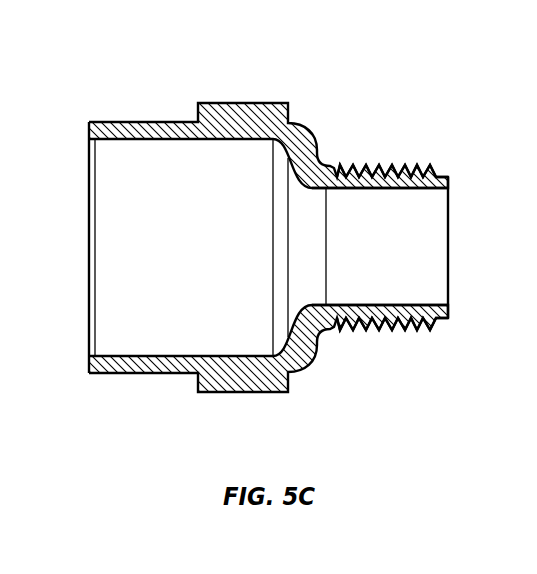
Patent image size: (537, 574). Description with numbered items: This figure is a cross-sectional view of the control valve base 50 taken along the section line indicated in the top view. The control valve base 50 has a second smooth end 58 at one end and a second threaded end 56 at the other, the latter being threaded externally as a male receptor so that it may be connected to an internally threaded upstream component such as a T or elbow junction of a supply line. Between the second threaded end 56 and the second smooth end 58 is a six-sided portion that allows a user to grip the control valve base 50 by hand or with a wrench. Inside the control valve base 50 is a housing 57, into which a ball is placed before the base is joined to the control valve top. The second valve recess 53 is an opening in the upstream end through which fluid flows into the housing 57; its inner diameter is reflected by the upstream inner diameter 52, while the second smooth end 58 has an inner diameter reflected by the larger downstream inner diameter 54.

The control valve base 50 is at (88, 73).
The upstream inner diameter 52 is at (448, 242).
The second valve recess 53 is at (327, 243).
The downstream inner diameter 54 is at (89, 249).
The second threaded end 56 is at (375, 170).
The housing 57 is at (133, 202).
The second smooth end 58 is at (133, 122).